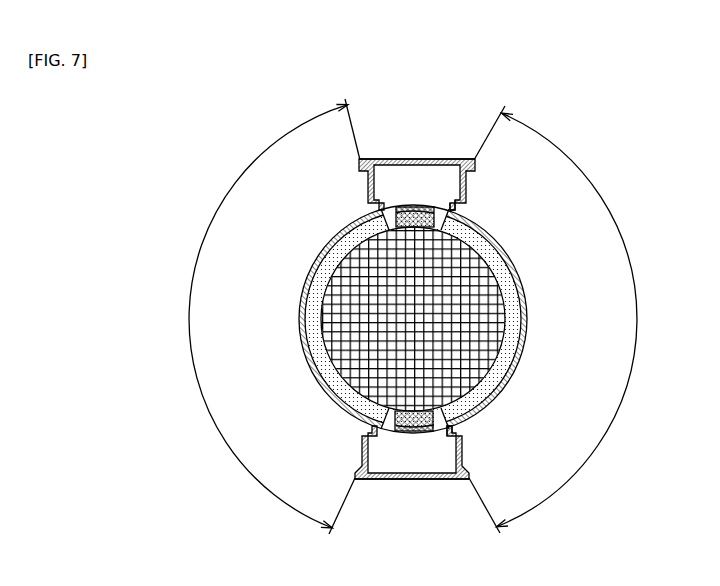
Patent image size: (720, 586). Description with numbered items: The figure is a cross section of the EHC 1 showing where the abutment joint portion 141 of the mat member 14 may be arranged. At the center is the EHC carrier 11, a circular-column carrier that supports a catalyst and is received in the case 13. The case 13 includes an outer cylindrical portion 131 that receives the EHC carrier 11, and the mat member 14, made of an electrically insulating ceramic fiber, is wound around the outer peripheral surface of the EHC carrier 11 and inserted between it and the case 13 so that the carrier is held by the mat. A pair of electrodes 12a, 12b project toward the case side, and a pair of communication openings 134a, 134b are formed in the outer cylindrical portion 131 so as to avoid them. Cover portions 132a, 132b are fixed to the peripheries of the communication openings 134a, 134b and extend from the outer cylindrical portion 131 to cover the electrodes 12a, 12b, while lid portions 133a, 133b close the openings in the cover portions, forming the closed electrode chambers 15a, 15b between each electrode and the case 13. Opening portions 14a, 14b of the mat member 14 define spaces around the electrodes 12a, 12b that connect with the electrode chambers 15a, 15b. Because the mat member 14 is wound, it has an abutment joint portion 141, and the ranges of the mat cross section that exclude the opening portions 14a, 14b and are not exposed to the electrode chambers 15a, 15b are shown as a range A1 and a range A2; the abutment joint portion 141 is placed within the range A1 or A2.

The EHC 1 is at (621, 139).
The EHC carrier 11 is at (362, 323).
The electrode 12a is at (410, 211).
The electrode 12b is at (414, 432).
The case 13 is at (401, 318).
The outer cylindrical portion 131 is at (352, 224).
The cover portion 132a is at (368, 182).
The cover portion 132b is at (362, 450).
The lid portion 133a is at (436, 159).
The lid portion 133b is at (444, 481).
The communication opening 134a is at (444, 197).
The communication opening 134b is at (441, 438).
The mat member 14 is at (438, 319).
The opening portion 14a is at (447, 223).
The opening portion 14b is at (450, 415).
The abutment joint portion 141 is at (517, 321).
The electrode chamber 15a is at (395, 186).
The electrode chamber 15b is at (397, 458).
The range A1 is at (568, 319).
The range A2 is at (257, 316).